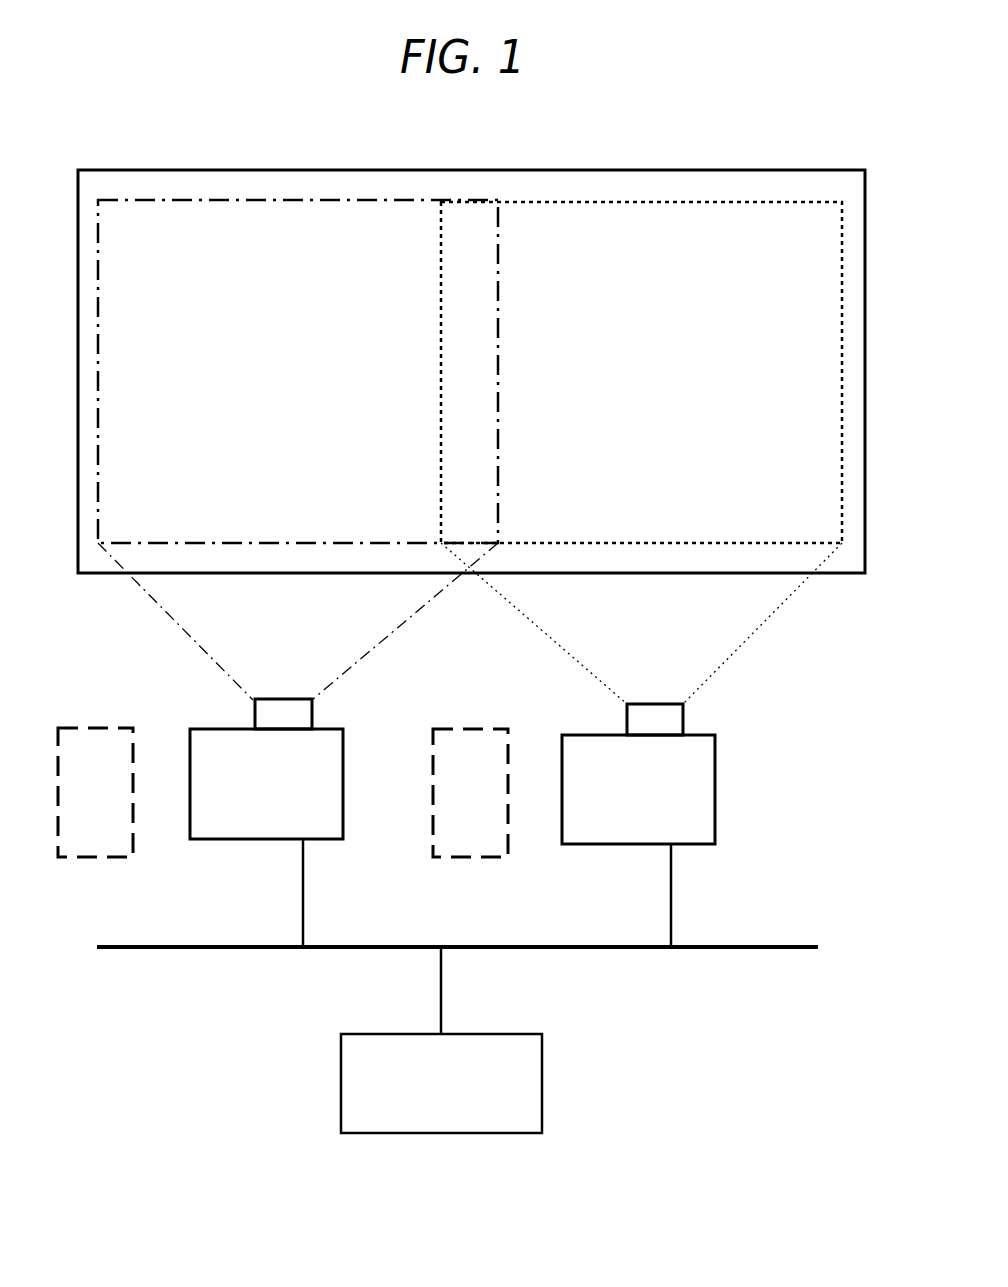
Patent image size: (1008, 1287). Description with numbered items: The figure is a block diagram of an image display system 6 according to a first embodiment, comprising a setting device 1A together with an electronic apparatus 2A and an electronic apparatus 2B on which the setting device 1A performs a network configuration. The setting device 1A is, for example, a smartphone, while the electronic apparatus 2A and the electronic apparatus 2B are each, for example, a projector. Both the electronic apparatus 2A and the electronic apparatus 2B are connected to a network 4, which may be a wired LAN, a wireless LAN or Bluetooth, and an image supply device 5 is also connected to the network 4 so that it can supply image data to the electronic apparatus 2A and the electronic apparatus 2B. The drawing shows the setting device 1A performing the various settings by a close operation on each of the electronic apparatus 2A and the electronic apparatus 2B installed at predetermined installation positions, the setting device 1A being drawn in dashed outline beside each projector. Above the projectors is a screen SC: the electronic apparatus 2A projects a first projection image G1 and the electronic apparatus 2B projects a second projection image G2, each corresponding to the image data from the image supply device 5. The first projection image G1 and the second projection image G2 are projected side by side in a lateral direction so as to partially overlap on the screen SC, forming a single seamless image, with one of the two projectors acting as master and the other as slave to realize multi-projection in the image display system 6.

The screen SC is at (460, 170).
The first projection image G1 is at (300, 200).
The second projection image G2 is at (680, 185).
The setting device 1A is at (98, 727).
The electronic apparatus 2A is at (250, 841).
The electronic apparatus 2B is at (620, 846).
The network 4 is at (786, 949).
The image supply device 5 is at (542, 1093).
The image display system 6 is at (672, 1031).